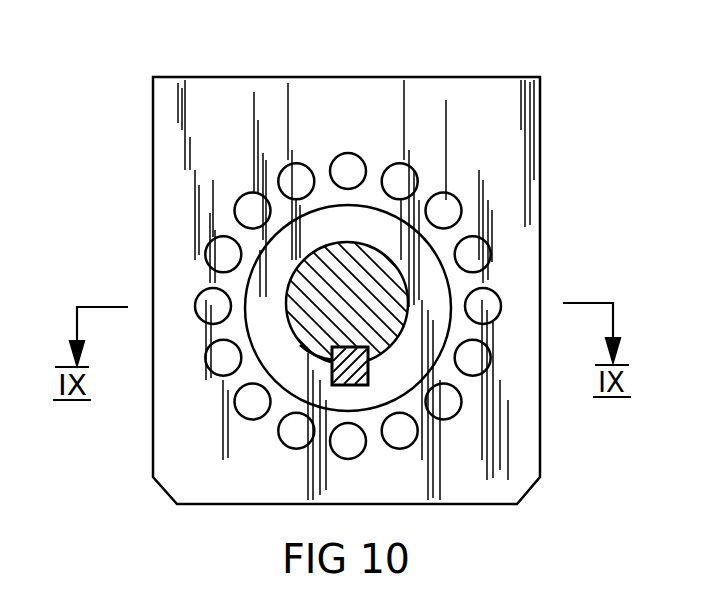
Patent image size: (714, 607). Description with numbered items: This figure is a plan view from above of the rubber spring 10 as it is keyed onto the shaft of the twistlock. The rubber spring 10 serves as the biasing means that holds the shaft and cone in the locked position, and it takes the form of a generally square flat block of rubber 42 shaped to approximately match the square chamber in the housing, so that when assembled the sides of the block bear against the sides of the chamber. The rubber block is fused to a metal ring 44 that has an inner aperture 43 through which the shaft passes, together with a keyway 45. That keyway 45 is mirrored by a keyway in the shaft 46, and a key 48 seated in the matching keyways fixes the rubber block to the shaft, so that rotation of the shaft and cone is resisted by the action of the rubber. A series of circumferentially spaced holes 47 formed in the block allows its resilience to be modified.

The rubber spring 10 is at (515, 118).
The square flat block of rubber 42 is at (510, 188).
The inner aperture 43 is at (287, 288).
The metal ring 44 is at (390, 238).
The keyway 45 is at (368, 347).
The keyway in the shaft 46 is at (331, 348).
The circumferentially spaced holes 47 is at (345, 166).
The key 48 is at (346, 386).